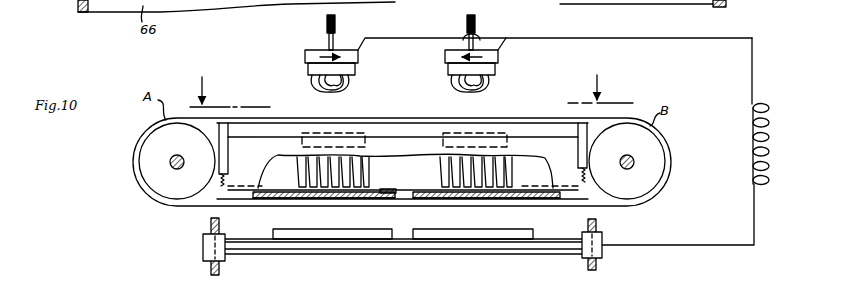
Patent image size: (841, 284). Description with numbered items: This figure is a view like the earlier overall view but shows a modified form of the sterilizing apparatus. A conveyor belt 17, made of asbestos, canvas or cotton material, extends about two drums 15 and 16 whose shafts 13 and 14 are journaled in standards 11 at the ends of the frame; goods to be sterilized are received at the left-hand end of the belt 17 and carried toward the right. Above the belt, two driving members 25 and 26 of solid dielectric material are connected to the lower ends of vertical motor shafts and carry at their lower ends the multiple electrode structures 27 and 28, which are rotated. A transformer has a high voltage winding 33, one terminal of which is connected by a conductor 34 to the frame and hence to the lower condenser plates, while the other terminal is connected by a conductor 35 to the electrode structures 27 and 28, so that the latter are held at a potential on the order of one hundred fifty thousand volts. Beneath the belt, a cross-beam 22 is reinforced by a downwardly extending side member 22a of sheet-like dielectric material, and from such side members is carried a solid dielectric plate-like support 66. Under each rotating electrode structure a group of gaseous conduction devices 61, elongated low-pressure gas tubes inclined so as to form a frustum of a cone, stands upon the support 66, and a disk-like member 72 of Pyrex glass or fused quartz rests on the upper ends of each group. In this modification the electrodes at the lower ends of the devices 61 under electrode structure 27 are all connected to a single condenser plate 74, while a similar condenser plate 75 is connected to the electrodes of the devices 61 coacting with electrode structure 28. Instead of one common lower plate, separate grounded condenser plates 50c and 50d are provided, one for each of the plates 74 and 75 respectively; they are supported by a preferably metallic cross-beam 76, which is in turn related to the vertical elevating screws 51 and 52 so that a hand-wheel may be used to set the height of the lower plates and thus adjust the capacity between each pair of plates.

The standards 11 is at (411, 83).
The shaft 13 is at (172, 168).
The shaft 14 is at (633, 166).
The drum 15 is at (145, 152).
The drum 16 is at (653, 155).
The conveyor belt 17 is at (550, 120).
The cross-beam 22 is at (438, 111).
The side member 22a is at (403, 146).
The driving member 25 is at (336, 26).
The driving member 26 is at (476, 26).
The multiple electrode structure 27 is at (356, 70).
The multiple electrode structure 28 is at (496, 70).
The high voltage winding 33 is at (753, 108).
The conductor 34 is at (675, 245).
The conductor 35 is at (567, 41).
The condenser plate 50c is at (328, 240).
The condenser plate 50d is at (482, 240).
The elevating screw 51 is at (211, 228).
The elevating screw 52 is at (596, 223).
The gaseous conduction devices 61 is at (358, 170).
The support 66 is at (395, 191).
The disk-like member 72 is at (300, 146).
The condenser plate 74 is at (290, 199).
The condenser plate 75 is at (535, 199).
The cross-beam 76 is at (378, 247).